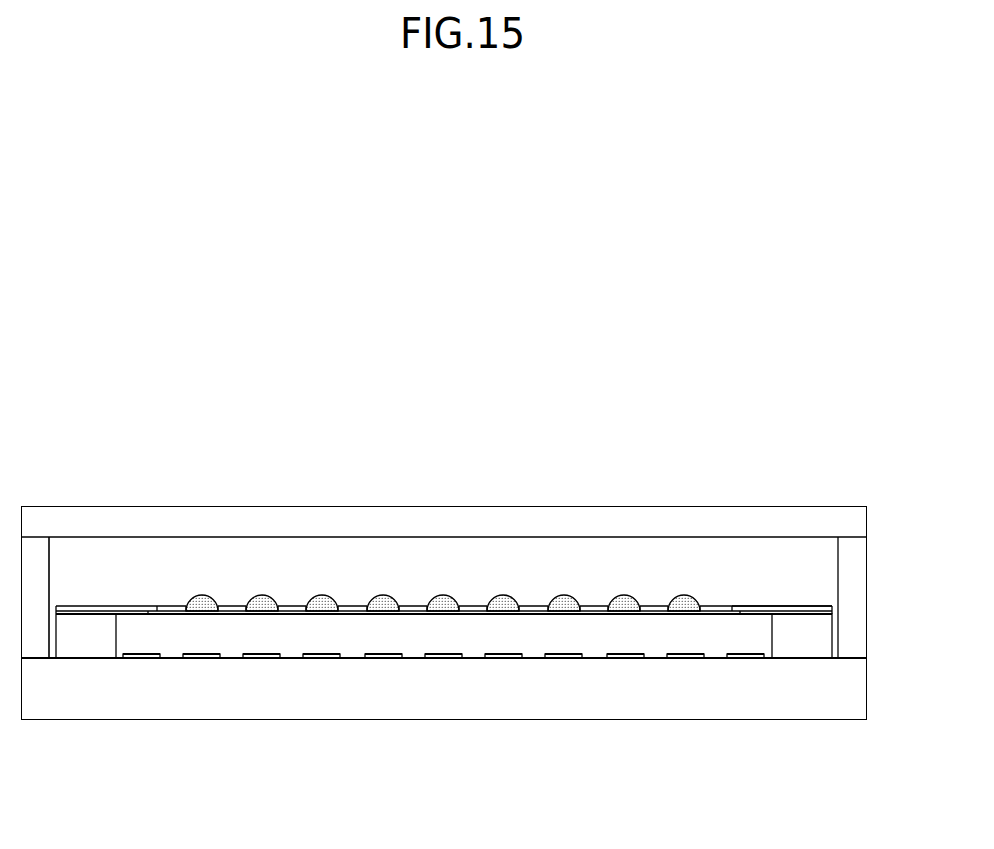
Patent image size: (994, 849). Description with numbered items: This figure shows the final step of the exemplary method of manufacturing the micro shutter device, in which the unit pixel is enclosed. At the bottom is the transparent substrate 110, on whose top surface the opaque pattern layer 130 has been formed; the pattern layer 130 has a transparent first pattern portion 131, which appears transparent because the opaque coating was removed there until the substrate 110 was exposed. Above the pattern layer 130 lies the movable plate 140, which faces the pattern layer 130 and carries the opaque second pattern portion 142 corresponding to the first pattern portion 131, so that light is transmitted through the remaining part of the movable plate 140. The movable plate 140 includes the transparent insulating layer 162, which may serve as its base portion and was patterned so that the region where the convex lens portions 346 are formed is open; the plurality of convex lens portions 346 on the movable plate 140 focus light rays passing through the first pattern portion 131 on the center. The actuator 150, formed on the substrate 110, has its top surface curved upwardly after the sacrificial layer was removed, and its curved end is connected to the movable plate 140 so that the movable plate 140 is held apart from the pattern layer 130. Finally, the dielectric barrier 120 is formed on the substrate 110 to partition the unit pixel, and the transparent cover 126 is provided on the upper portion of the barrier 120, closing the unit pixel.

The substrate 110 is at (837, 703).
The barrier 120 is at (847, 560).
The cover 126 is at (663, 518).
The pattern layer 130 is at (745, 662).
The first pattern portion 131 is at (713, 658).
The movable plate 140 is at (453, 618).
The second pattern portion 142 is at (592, 606).
The actuator 150 is at (822, 643).
The insulating layer 162 is at (805, 612).
The convex lens portions 346 is at (383, 600).